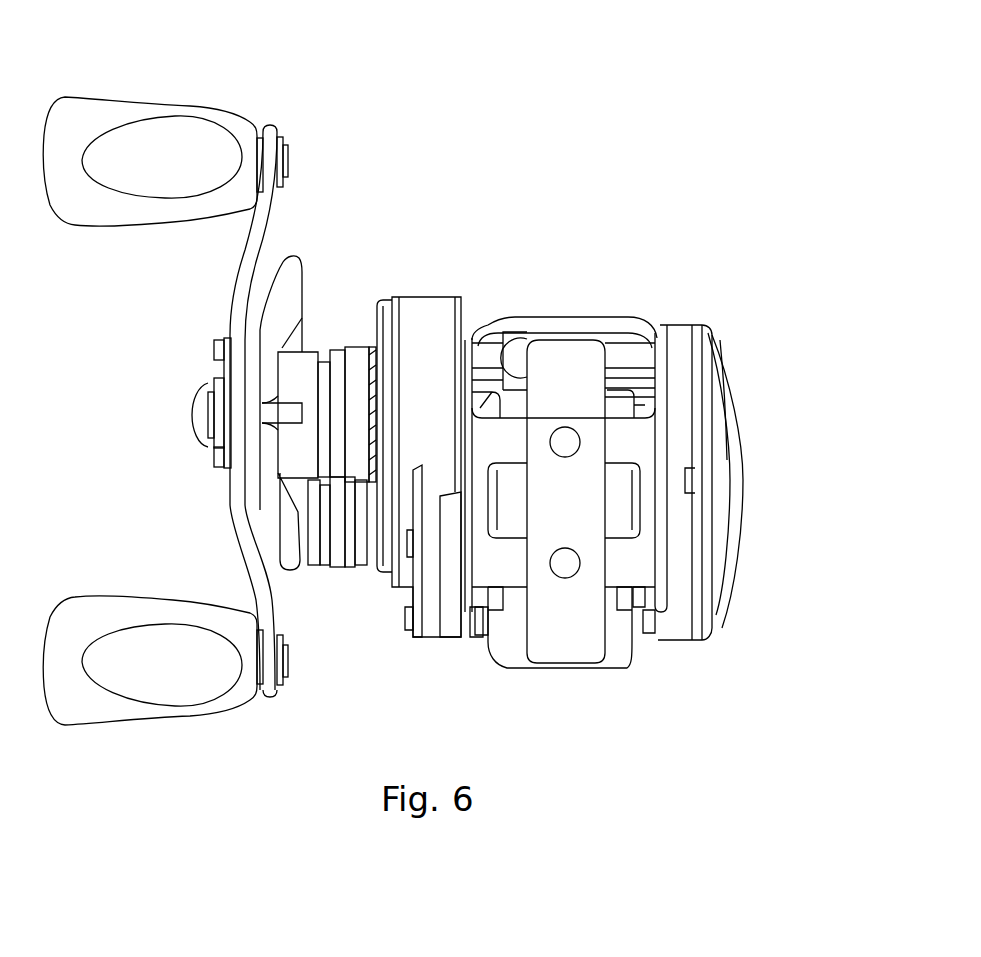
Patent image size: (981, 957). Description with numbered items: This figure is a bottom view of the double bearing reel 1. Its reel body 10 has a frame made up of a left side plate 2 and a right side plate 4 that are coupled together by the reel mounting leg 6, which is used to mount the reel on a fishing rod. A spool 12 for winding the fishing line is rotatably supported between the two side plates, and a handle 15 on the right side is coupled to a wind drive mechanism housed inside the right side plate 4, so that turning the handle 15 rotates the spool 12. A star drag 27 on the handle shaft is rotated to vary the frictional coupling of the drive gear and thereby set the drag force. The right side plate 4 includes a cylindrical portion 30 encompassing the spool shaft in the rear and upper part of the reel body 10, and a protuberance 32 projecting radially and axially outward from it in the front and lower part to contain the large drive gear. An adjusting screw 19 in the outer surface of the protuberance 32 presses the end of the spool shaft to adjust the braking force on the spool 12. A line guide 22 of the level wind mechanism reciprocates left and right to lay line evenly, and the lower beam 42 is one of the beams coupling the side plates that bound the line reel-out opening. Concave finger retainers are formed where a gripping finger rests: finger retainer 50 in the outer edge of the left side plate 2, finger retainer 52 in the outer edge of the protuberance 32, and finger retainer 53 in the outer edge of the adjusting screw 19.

The double bearing reel 1 is at (638, 163).
The left side plate 2 is at (721, 333).
The right side plate 4 is at (432, 297).
The reel mounting leg 6 is at (635, 570).
The reel body 10 is at (675, 310).
The spool 12 is at (620, 502).
The handle 15 is at (243, 293).
The adjusting screw 19 is at (357, 368).
The line guide 22 is at (520, 348).
The star drag 27 is at (289, 287).
The cylindrical portion 30 is at (385, 574).
The protuberance 32 is at (443, 322).
The lower beam 42 is at (607, 317).
The concave finger retainer 50 is at (720, 633).
The concave finger retainer 52 is at (387, 313).
The concave finger retainer 53 is at (313, 553).